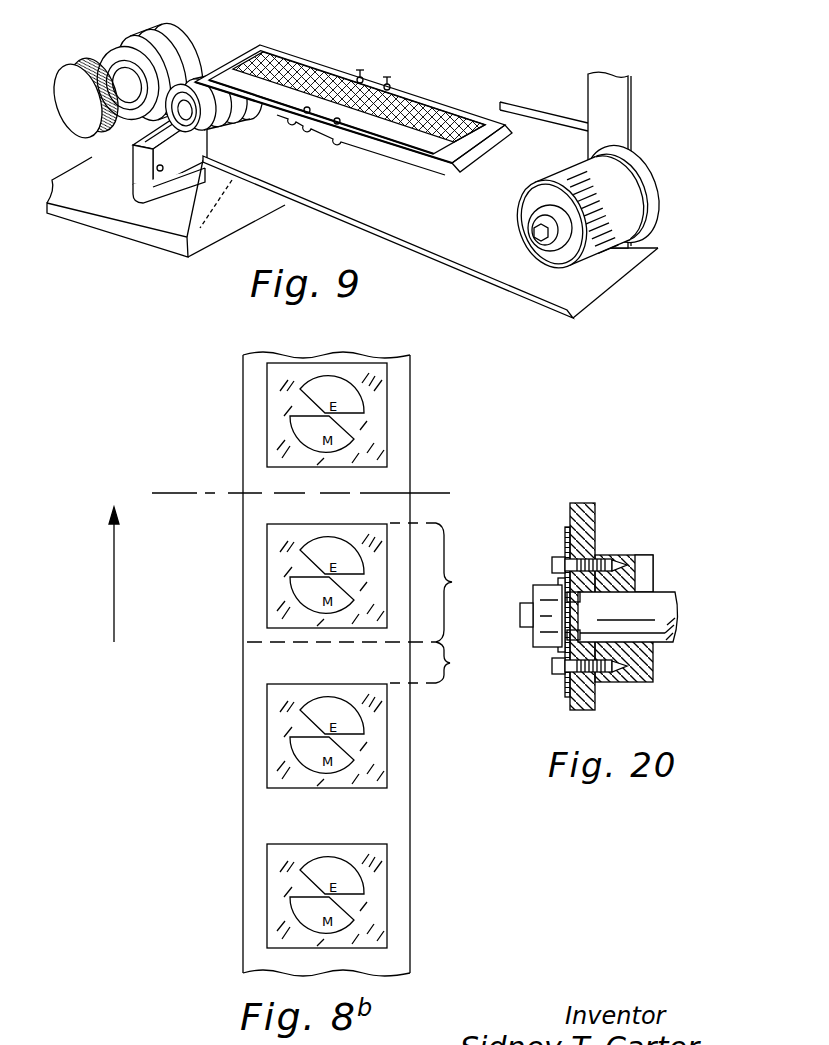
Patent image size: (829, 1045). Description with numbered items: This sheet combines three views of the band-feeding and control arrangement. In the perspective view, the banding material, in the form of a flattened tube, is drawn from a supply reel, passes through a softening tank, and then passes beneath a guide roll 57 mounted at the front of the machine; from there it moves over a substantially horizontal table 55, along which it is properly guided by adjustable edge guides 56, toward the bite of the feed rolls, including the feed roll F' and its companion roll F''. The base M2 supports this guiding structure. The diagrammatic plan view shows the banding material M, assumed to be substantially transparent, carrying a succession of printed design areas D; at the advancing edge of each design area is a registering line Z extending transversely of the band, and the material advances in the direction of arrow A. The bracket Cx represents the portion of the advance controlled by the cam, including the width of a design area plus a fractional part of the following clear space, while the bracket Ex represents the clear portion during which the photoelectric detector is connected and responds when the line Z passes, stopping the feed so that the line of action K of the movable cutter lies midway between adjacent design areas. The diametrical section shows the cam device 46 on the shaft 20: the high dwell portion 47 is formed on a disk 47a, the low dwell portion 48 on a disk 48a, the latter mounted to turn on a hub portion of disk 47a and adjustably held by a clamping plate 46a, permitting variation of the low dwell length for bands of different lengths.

In FIG. 9, the feed roll F' is at (128, 80).
In FIG. 9, the knurled feed roller F'' is at (214, 73).
In FIG. 9, the adjustable edge guides 56 is at (287, 100).
In FIG. 9, the table 55 is at (297, 123).
In FIG. 9, the guide roll 57 is at (607, 213).
In FIG. 9, the base plate M2 is at (583, 288).
In FIG. 8B, the registering line Z is at (340, 360).
In FIG. 8B, the design areas D is at (380, 412).
In FIG. 8B, the line of action of the movable cutter K is at (176, 462).
In FIG. 8B, the cam-controlled advance distance Cx is at (364, 582).
In FIG. 8B, the detector-controlled advance distance Ex is at (435, 662).
In FIG. 8B, the feed direction A is at (112, 573).
In FIG. 8B, the banding material M is at (226, 812).
In FIG. 20, the cam device 46 is at (538, 510).
In FIG. 20, the high dwell portion 47 is at (592, 502).
In FIG. 20, the disk 47a is at (593, 535).
In FIG. 20, the disk 48a is at (566, 528).
In FIG. 20, the shaft 20 is at (665, 598).
In FIG. 20, the clamping plate 46a is at (567, 686).
In FIG. 20, the low dwell portion 48 is at (576, 712).